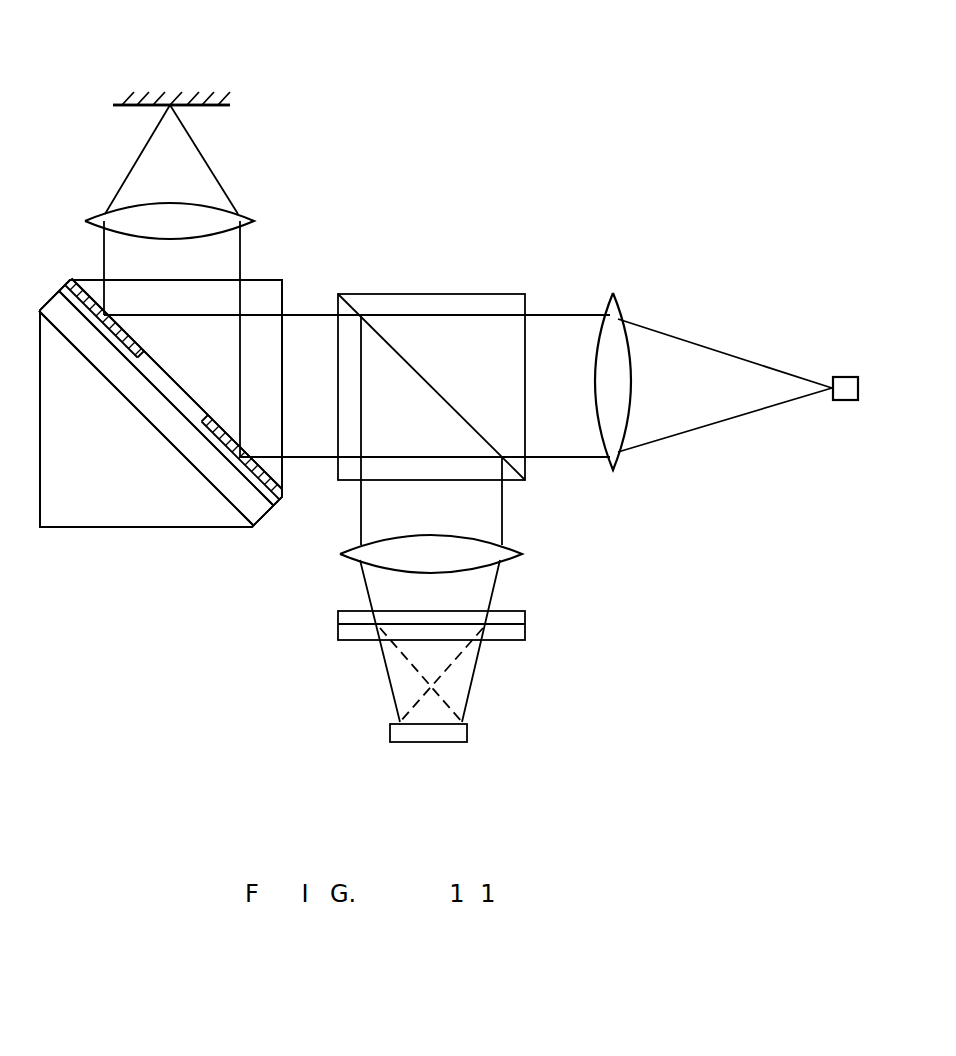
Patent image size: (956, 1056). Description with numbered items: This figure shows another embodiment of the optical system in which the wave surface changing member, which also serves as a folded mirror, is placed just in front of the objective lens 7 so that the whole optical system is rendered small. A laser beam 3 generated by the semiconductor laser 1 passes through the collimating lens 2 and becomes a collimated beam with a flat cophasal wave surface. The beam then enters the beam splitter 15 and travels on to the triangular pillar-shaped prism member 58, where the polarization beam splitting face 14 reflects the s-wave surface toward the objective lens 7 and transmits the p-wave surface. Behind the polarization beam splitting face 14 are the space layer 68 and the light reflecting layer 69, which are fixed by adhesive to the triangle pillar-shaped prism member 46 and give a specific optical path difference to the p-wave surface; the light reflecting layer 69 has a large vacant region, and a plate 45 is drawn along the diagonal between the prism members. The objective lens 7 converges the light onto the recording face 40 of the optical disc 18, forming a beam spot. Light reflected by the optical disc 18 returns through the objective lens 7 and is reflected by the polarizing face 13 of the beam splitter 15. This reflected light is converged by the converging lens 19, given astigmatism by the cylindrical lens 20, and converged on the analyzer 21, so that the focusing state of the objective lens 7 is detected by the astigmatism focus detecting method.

The semiconductor laser 1 is at (846, 382).
The collimating lens 2 is at (617, 308).
The laser beam 3 is at (762, 398).
The objective lens 7 is at (243, 218).
The polarizing face 13 is at (440, 394).
The polarization beam splitting face 14 is at (182, 393).
The beam splitter 15 is at (443, 294).
The optical disc 18 is at (170, 76).
The converging lens 19 is at (525, 548).
The cylindrical lens 20 is at (527, 624).
The analyzer 21 is at (462, 734).
The recording face 40 is at (137, 106).
The transparent plate 45 is at (198, 452).
The triangle pillar-shaped prism member 46 is at (127, 508).
The triangular pillar-shaped prism member 58 is at (285, 292).
The space layer 68 is at (80, 277).
The light reflecting layer 69 is at (103, 337).